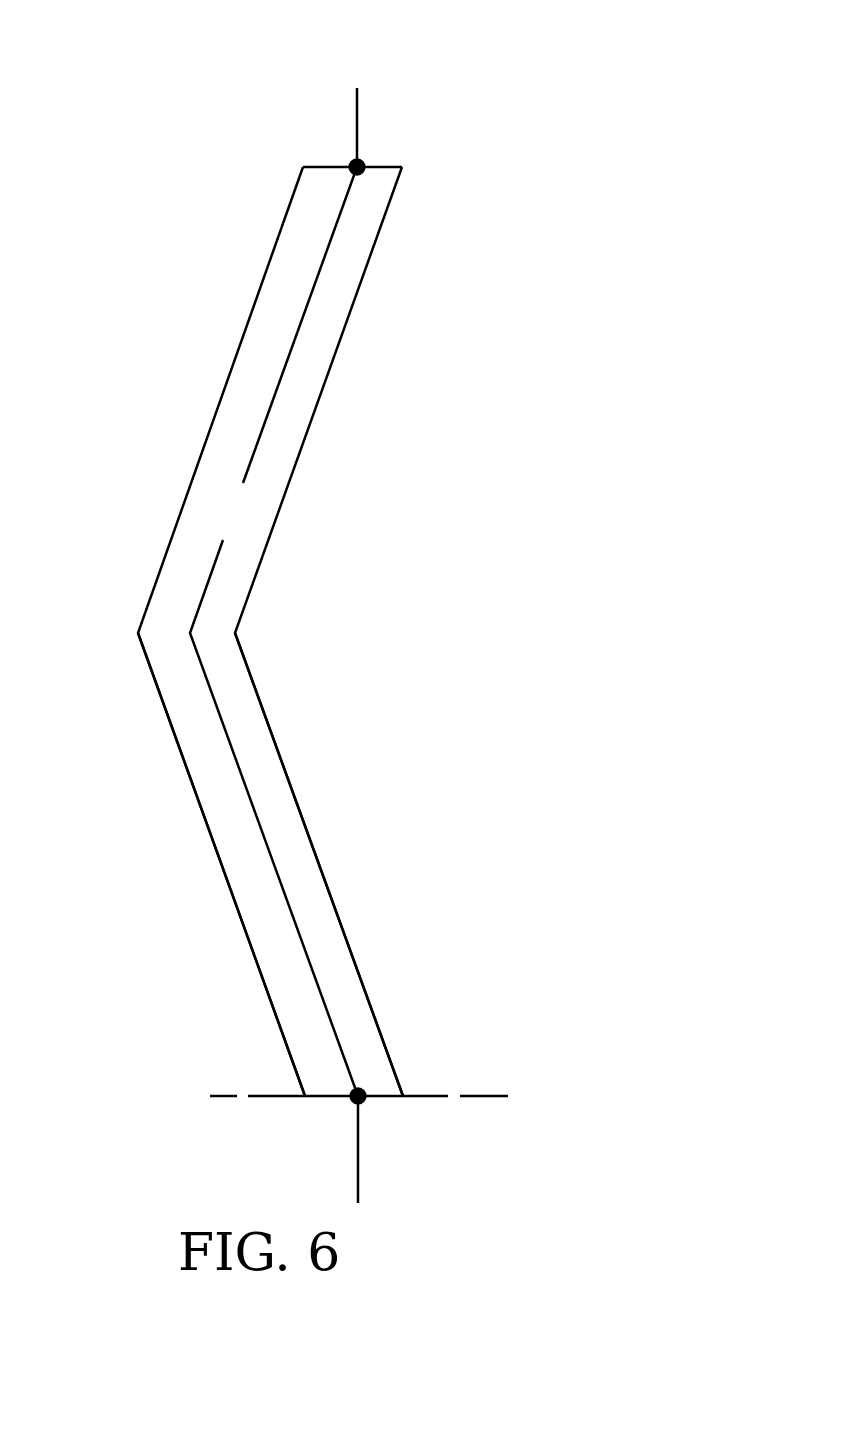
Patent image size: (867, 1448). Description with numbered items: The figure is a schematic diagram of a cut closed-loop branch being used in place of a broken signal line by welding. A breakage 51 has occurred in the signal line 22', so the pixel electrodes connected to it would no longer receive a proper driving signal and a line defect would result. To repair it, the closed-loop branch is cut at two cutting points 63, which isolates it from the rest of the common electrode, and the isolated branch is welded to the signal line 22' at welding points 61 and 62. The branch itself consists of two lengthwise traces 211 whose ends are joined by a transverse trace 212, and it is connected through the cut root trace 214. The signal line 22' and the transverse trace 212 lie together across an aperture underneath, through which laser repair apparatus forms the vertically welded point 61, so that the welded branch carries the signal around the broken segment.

The signal line 22' is at (299, 86).
The transverse trace 212 is at (318, 163).
The welding point 61 is at (362, 163).
The breakage 51 is at (222, 519).
The lengthwise traces 211 is at (171, 725).
The root trace 214 is at (423, 1094).
The cutting points 63 is at (243, 1075).
The welding point 62 is at (366, 1098).